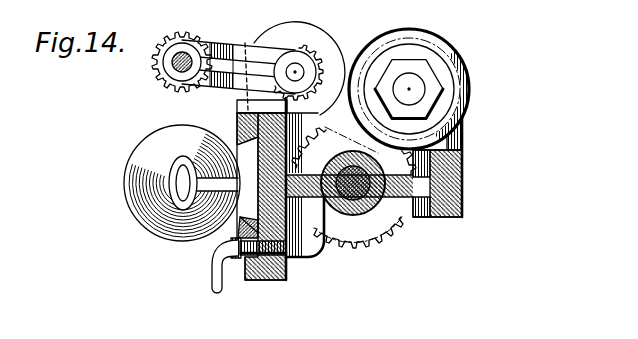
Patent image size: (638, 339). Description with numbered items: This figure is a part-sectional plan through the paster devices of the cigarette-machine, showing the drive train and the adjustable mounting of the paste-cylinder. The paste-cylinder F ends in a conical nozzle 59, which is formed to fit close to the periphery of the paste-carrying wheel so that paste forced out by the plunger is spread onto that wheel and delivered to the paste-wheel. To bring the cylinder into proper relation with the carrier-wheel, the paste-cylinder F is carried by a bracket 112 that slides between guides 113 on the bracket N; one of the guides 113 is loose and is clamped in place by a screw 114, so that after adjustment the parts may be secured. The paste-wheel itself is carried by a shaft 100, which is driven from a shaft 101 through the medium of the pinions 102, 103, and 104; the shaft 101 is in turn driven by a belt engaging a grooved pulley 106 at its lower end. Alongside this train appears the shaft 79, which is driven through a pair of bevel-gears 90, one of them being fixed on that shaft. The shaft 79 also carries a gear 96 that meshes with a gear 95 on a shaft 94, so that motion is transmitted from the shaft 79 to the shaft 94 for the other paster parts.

The pinion 104 is at (183, 33).
The grooved pulley 106 is at (280, 32).
The pinion 102 is at (313, 50).
The bevel-gears 90 is at (458, 58).
The shaft 79 is at (424, 89).
The gear 96 is at (447, 118).
The shaft 100 is at (180, 62).
The pinion 103 is at (245, 97).
The shaft 101 is at (243, 108).
The paste-cylinder F is at (128, 176).
The conical nozzle 59 is at (177, 193).
The bracket 112 is at (250, 215).
The guides 113 is at (248, 270).
The screw 114 is at (211, 290).
The bracket N is at (287, 281).
The shaft 94 is at (362, 198).
The gear 95 is at (375, 236).